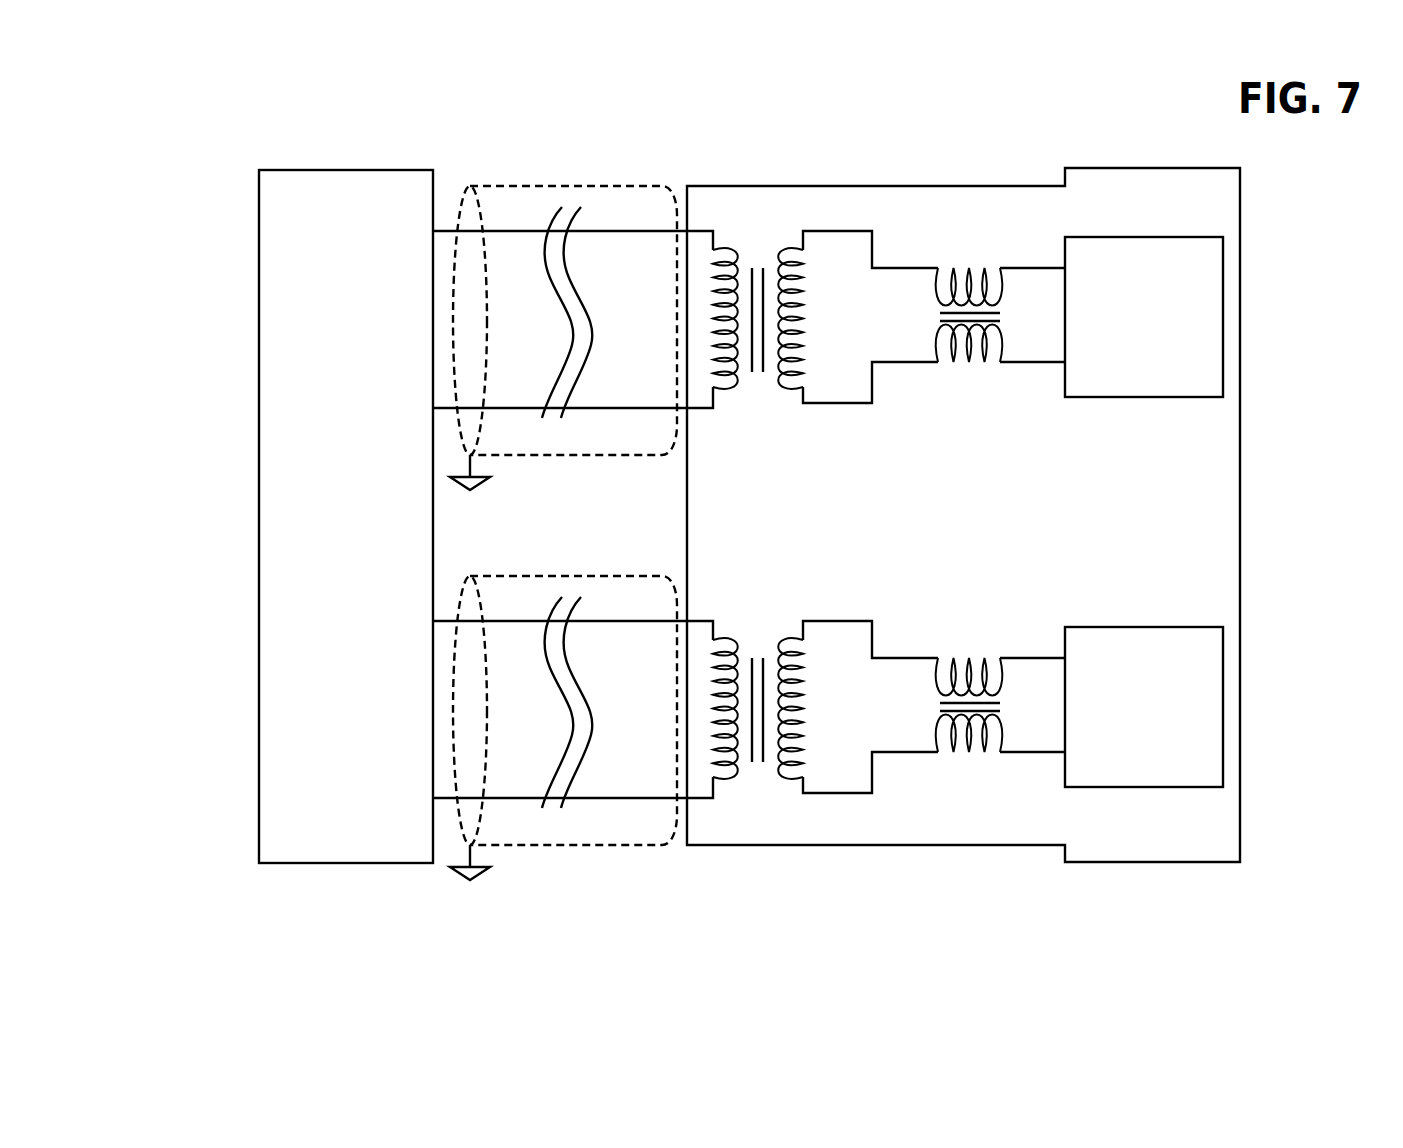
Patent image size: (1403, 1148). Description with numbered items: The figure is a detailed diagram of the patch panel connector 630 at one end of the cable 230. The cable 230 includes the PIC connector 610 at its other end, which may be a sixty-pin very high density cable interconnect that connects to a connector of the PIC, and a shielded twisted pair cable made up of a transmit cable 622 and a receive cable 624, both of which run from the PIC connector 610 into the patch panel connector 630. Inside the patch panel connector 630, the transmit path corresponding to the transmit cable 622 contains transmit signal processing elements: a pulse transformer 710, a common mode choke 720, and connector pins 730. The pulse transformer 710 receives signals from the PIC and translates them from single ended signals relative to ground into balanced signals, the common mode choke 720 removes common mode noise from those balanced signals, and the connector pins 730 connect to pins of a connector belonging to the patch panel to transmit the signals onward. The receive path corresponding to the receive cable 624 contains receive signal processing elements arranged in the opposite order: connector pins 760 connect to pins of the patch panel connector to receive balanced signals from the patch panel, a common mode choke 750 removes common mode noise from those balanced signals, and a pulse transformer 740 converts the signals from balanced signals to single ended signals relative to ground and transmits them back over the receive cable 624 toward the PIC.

The cable 230 is at (276, 130).
The PIC connector 610 is at (346, 516).
The transmit cable 622 is at (627, 457).
The receive cable 624 is at (545, 846).
The patch panel connector 630 is at (960, 518).
The pulse transformer 710 is at (758, 248).
The common mode choke 720 is at (968, 248).
The connector pins 730 is at (1144, 317).
The pulse transformer 740 is at (758, 787).
The common mode choke 750 is at (968, 770).
The connector pins 760 is at (1144, 707).